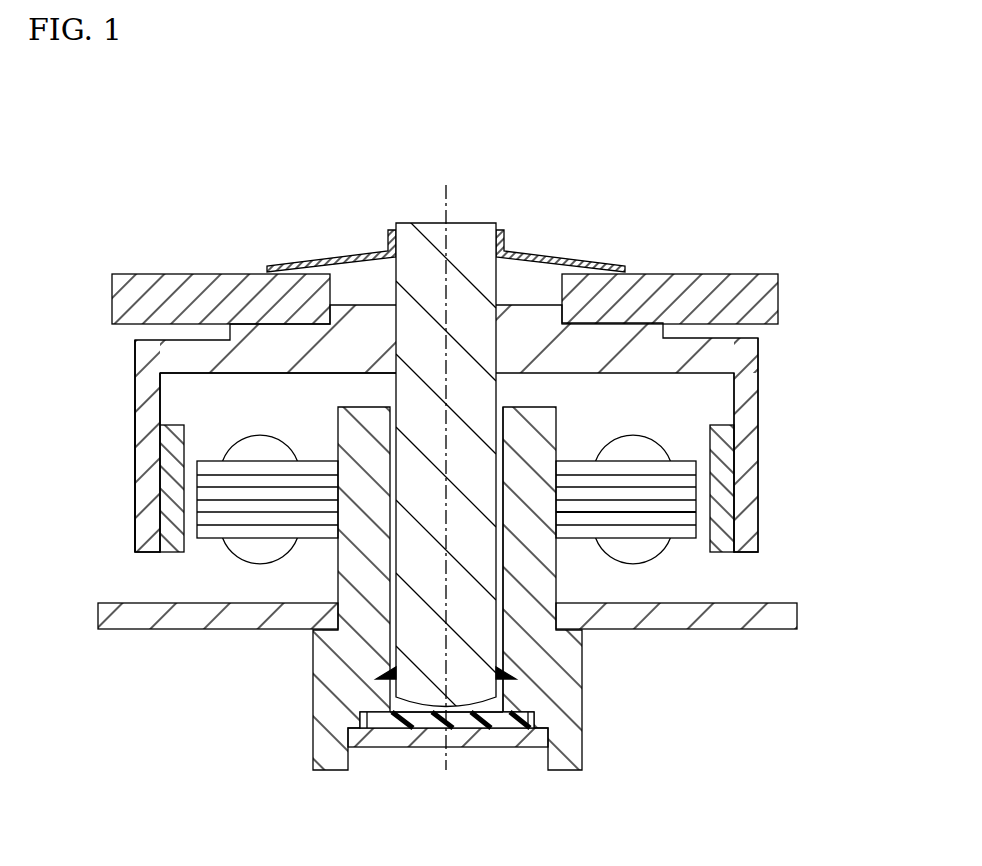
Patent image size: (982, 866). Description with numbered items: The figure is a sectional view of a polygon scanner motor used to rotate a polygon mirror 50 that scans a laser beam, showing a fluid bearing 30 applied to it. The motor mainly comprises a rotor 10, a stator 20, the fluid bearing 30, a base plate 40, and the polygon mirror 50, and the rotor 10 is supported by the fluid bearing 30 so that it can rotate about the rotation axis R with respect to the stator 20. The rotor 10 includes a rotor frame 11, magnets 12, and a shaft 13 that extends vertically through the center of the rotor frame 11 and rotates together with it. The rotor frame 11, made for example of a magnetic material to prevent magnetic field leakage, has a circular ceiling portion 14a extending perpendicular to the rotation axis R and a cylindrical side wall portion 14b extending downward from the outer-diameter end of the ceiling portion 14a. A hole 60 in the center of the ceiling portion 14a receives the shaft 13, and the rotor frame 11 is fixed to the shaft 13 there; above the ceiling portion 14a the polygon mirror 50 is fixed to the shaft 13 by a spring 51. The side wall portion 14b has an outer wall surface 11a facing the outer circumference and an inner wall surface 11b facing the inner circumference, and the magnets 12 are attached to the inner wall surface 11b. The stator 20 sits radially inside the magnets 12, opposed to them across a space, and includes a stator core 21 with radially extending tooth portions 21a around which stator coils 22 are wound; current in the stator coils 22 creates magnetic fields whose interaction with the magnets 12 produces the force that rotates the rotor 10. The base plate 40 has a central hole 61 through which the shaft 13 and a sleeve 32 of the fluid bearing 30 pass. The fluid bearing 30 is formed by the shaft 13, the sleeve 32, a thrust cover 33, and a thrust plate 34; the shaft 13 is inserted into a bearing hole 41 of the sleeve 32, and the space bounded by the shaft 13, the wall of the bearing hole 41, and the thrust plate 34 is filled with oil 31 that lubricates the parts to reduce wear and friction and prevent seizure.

The rotor 10 is at (471, 428).
The rotor frame 11 is at (746, 394).
The outer wall surface 11a is at (133, 413).
The inner wall surface 11b is at (160, 411).
The magnets 12 is at (494, 488).
The shaft 13 is at (465, 362).
The ceiling portion 14a is at (272, 358).
The side wall portion 14b is at (134, 459).
The stator 20 is at (454, 478).
The stator core 21 is at (657, 480).
The tooth portions 21a is at (625, 505).
The stator coils 22 is at (623, 457).
The fluid bearing 30 is at (447, 624).
The oil 31 is at (507, 708).
The sleeve 32 is at (567, 755).
The thrust cover 33 is at (428, 747).
The thrust plate 34 is at (394, 730).
The base plate 40 is at (782, 613).
The bearing hole 41 is at (505, 630).
The polygon mirror 50 is at (733, 274).
The spring 51 is at (316, 262).
The hole 60 is at (397, 304).
The hole 61 is at (444, 617).
The rotation axis R is at (448, 192).